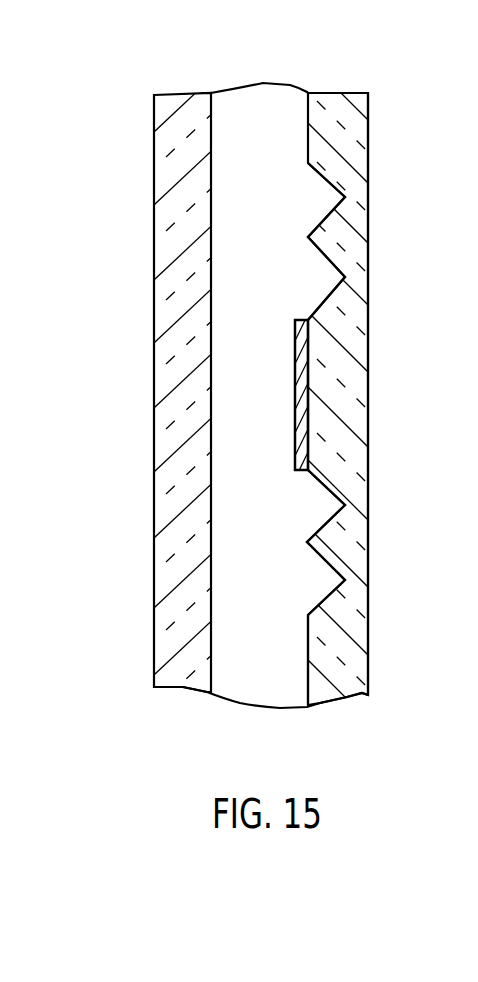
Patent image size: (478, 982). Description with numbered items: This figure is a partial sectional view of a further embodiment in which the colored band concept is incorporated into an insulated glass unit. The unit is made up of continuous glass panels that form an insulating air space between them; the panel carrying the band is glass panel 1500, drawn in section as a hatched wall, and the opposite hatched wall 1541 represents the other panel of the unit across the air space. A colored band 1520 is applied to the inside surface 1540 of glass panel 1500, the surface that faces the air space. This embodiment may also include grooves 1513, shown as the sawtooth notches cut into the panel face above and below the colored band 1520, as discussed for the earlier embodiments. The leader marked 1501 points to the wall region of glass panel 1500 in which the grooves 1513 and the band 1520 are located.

The glass panel 1500 is at (363, 633).
The wall of tubular member 1501 is at (384, 350).
The grooves 1513 is at (325, 282).
The colored band 1520 is at (295, 355).
The inside surface 1540 is at (312, 649).
The opposite wall 1541 is at (167, 514).